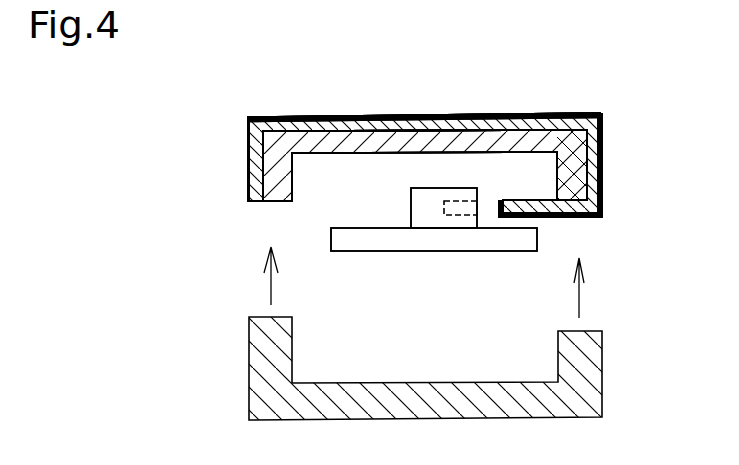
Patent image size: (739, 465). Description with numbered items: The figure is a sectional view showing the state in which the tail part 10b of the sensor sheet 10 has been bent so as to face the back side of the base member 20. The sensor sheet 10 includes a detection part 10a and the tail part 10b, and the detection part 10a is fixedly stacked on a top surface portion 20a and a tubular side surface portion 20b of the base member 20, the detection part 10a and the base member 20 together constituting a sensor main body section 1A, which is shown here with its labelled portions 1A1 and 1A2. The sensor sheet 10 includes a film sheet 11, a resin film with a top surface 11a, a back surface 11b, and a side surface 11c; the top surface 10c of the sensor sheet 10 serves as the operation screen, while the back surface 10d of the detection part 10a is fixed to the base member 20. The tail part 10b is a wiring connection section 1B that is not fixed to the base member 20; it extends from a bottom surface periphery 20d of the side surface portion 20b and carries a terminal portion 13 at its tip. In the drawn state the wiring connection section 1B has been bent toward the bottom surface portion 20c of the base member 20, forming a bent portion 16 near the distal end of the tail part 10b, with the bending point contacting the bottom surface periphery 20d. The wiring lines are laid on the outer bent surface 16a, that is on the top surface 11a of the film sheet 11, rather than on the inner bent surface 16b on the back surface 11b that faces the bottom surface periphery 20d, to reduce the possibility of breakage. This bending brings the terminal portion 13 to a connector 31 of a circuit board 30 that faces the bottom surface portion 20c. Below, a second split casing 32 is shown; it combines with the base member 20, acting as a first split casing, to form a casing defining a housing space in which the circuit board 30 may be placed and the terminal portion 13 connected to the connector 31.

The sensor main body section 1A is at (396, 116).
The first portion of first member 1A1 is at (283, 116).
The second portion of first member 1A2 is at (248, 140).
The sensor sheet 10 is at (247, 158).
The detection part 10a is at (424, 138).
The tail part 10b is at (577, 220).
The top surface 10c is at (358, 116).
The back surface 10d is at (326, 142).
The film sheet 11 is at (424, 93).
The top surface 11a is at (470, 116).
The back surface 11b is at (376, 140).
The side surface 11c is at (247, 188).
The base member 20 is at (272, 203).
The top surface portion 20a is at (552, 115).
The side surface portion 20b is at (600, 172).
The bottom surface portion 20c is at (452, 154).
The bottom surface periphery 20d is at (603, 203).
The bent portion 16 is at (587, 199).
The outer bent surface 16a is at (598, 220).
The inner bent surface 16b is at (585, 180).
The circuit board 30 is at (340, 252).
The connector 31 is at (437, 222).
The terminal portion 13 is at (457, 216).
The wiring connection section 1B is at (553, 220).
The second split casing 32 is at (433, 421).